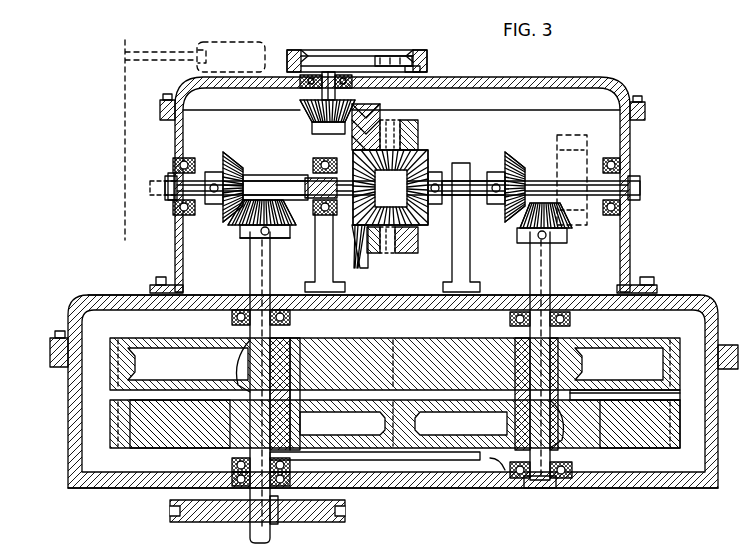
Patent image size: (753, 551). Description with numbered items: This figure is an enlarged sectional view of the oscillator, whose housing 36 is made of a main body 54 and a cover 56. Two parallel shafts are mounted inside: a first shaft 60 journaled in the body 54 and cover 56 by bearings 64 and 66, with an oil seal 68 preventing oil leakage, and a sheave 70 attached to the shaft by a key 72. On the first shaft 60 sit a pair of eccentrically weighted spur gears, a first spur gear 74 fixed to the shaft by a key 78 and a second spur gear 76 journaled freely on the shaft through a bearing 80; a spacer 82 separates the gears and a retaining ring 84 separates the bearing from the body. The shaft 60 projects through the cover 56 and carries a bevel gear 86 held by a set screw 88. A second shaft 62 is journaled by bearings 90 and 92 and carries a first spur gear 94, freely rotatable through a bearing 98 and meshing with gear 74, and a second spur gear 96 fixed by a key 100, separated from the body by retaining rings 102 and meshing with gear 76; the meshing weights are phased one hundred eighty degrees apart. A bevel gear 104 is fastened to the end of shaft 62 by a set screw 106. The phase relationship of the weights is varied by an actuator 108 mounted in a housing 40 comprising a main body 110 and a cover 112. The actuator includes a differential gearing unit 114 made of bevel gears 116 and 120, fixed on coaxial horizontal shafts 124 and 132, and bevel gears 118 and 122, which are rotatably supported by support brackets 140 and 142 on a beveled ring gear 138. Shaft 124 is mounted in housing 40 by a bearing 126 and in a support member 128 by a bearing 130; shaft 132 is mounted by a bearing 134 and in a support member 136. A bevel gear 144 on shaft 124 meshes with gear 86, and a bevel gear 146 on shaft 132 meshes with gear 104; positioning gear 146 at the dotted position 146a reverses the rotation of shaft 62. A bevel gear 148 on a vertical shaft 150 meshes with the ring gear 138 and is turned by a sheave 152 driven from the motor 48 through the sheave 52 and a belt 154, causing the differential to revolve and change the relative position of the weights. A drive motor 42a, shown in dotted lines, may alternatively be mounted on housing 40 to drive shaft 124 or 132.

The housing 36 is at (64, 425).
The housing 40 is at (621, 85).
The drive motor 42a is at (237, 42).
The motor 48 is at (428, 81).
The sheave 52 is at (420, 55).
The main body 54 is at (70, 480).
The cover 56 is at (78, 300).
The first shaft 60 is at (250, 540).
The second shaft 62 is at (540, 488).
The bearing 64 is at (291, 465).
The bearing 66 is at (230, 320).
The oil seal 68 is at (230, 486).
The sheave 70 is at (335, 516).
The key 72 is at (280, 522).
The first spur gear 74 is at (110, 380).
The second spur gear 76 is at (120, 437).
The key 78 is at (275, 365).
The bearing 80 is at (240, 432).
The spacer 82 is at (318, 378).
The retaining ring 84 is at (290, 452).
The bevel gear 86 is at (232, 229).
The set screw 88 is at (273, 236).
The bearing 90 is at (572, 472).
The bearing 92 is at (565, 325).
The first spur gear 94 is at (680, 385).
The second spur gear 96 is at (675, 435).
The bearing 98 is at (600, 395).
The key 100 is at (556, 430).
The retaining rings 102 is at (500, 472).
The bevel gear 104 is at (568, 232).
The set screw 106 is at (520, 246).
The actuator 108 is at (505, 133).
The main body 110 is at (630, 152).
The cover 112 is at (625, 96).
The differential gearing unit 114 is at (322, 129).
The bevel gear 116 is at (334, 158).
The bevel gear 118 is at (420, 149).
The bevel gear 120 is at (427, 160).
The bevel gear 122 is at (416, 240).
The horizontal shaft 124 is at (283, 168).
The bearing 126 is at (200, 158).
The support member 128 is at (317, 266).
The bearing 130 is at (287, 200).
The horizontal shaft 132 is at (480, 179).
The bearing 134 is at (605, 160).
The support member 136 is at (455, 265).
The beveled ring gear 138 is at (370, 124).
The support bracket 140 is at (417, 112).
The support bracket 142 is at (366, 258).
The bevel gear 144 is at (237, 160).
The bevel gear 146 is at (521, 165).
The bevel gear alternative position 146a is at (569, 150).
The bevel gear 148 is at (300, 108).
The vertical shaft 150 is at (328, 70).
The sheave 152 is at (350, 56).
The belt 154 is at (393, 58).